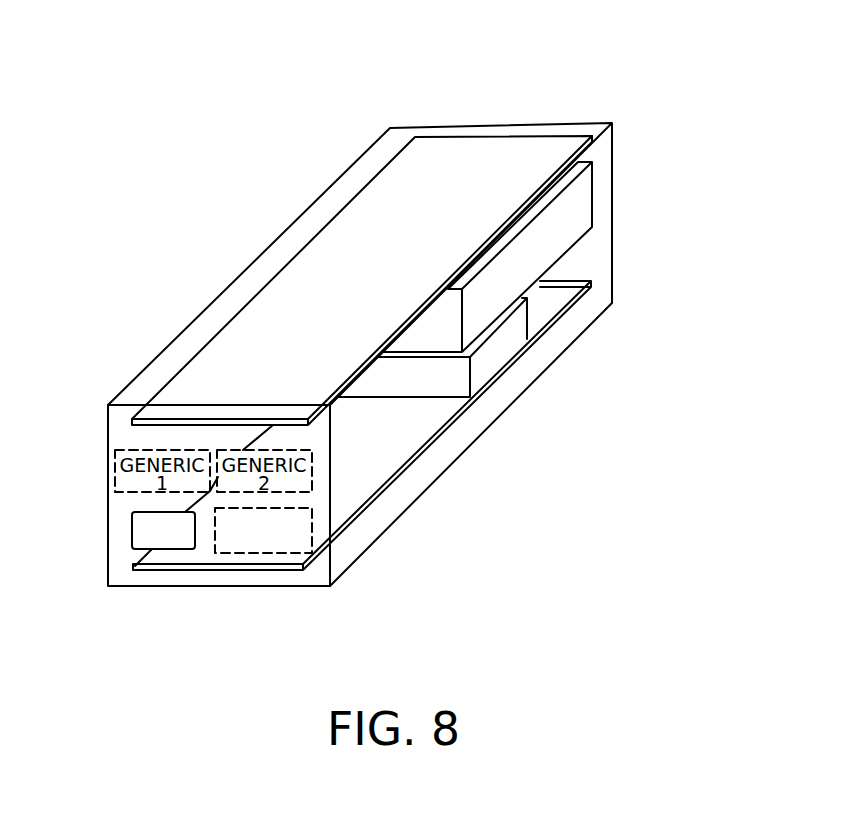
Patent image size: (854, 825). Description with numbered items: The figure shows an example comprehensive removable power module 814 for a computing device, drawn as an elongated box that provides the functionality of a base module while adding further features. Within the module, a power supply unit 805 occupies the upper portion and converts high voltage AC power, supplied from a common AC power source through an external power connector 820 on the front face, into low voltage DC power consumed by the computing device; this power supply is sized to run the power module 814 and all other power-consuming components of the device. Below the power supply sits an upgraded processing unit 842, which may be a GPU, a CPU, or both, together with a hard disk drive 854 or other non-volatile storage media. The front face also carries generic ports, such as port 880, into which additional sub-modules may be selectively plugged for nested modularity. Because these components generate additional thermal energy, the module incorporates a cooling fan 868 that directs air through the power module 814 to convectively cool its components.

The comprehensive removable power module 814 is at (276, 146).
The power supply unit 805 is at (459, 229).
The upgraded processing unit 842 is at (410, 457).
The hard disk drive 854 is at (585, 229).
The cooling fan 868 is at (500, 367).
The external power connector 820 is at (163, 549).
The generic port 880 is at (283, 553).